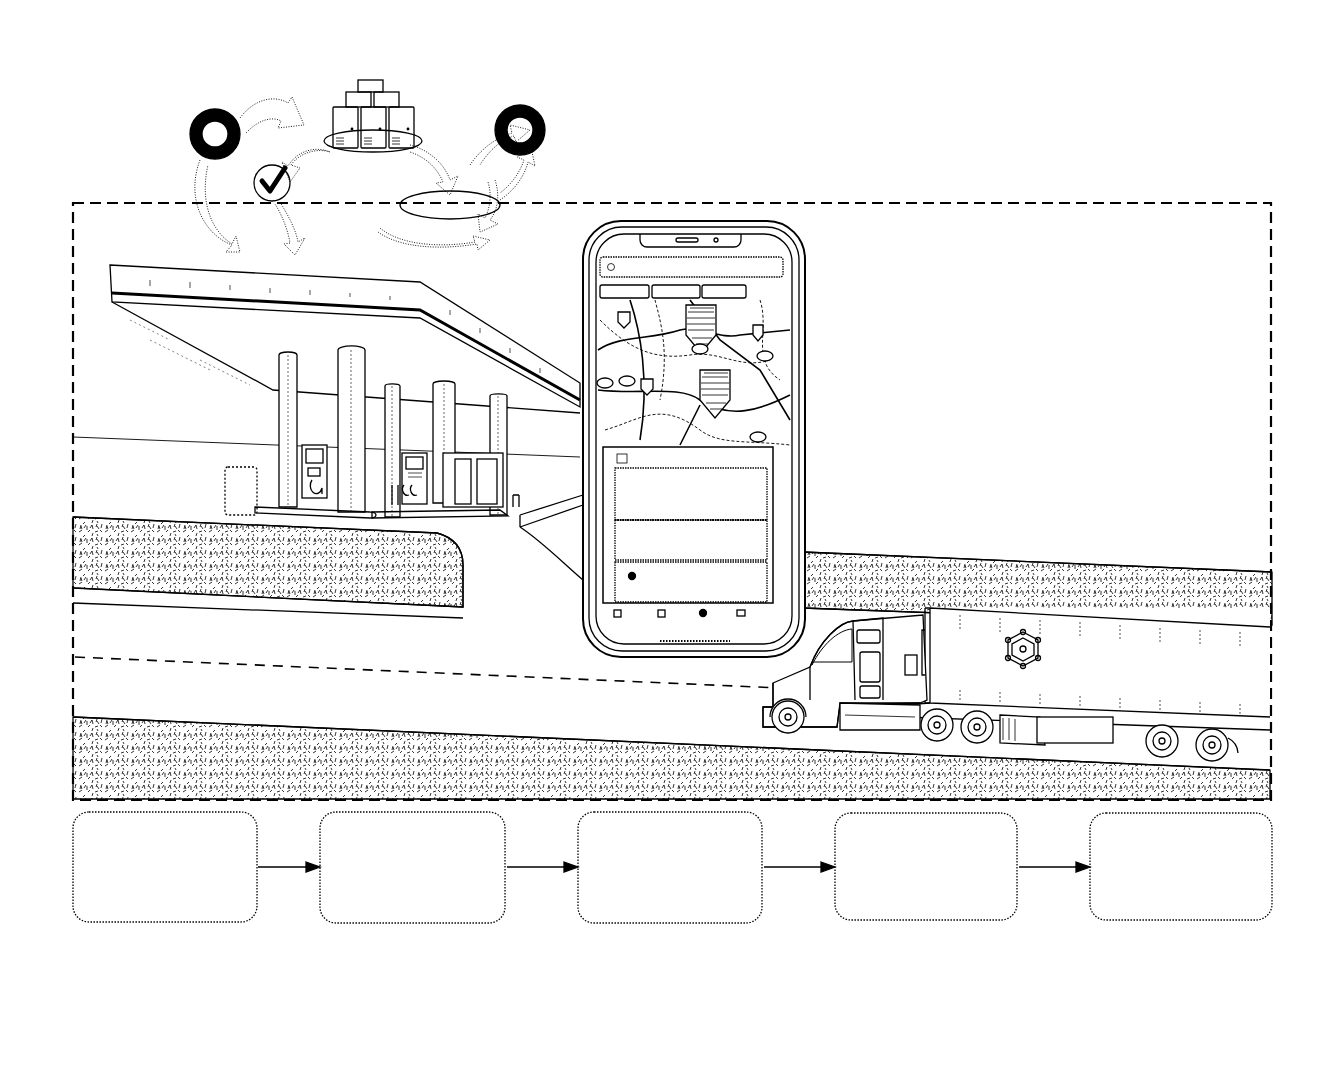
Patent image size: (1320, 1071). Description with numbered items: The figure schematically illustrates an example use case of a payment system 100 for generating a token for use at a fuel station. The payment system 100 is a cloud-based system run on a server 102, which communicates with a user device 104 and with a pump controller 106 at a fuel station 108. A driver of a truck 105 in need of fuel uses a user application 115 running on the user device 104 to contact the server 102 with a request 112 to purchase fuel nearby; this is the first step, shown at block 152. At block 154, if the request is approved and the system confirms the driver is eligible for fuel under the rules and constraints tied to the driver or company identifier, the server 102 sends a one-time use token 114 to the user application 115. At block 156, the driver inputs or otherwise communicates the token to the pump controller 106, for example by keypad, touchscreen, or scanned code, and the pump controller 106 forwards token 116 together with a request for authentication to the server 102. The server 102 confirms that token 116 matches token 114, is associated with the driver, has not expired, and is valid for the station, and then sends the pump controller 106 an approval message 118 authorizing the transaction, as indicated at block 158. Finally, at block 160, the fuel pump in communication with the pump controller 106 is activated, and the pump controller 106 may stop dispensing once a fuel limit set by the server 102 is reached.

The payment system 100 is at (924, 64).
The server 102 is at (393, 92).
The user device 104 is at (800, 296).
The truck 105 is at (990, 613).
The pump controller 106 is at (222, 488).
The fuel station 108 is at (121, 245).
The request 112 is at (415, 210).
The token 114 is at (545, 118).
The user application 115 is at (778, 556).
The token 116 is at (205, 113).
The approval message 118 is at (292, 191).
The block 152 is at (165, 922).
The block 154 is at (413, 923).
The block 156 is at (743, 923).
The step: system authenticates fuel token and authorizes transaction 158 is at (930, 921).
The block 160 is at (1182, 921).